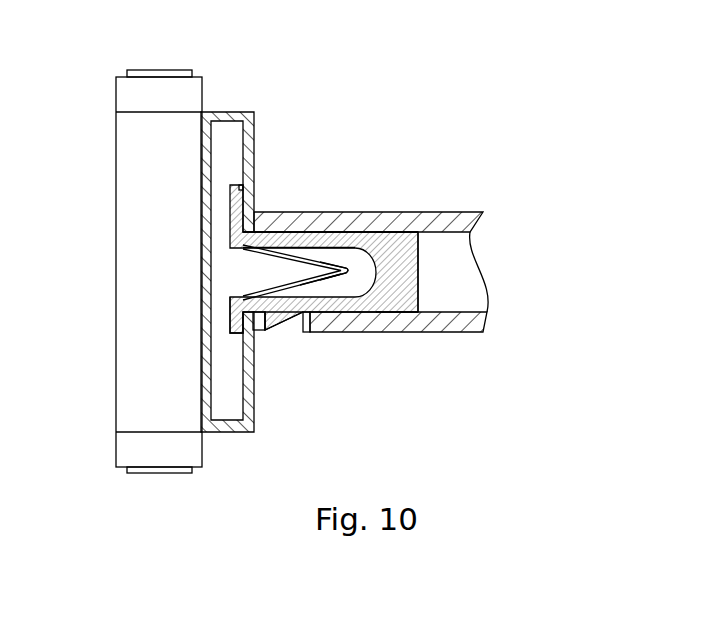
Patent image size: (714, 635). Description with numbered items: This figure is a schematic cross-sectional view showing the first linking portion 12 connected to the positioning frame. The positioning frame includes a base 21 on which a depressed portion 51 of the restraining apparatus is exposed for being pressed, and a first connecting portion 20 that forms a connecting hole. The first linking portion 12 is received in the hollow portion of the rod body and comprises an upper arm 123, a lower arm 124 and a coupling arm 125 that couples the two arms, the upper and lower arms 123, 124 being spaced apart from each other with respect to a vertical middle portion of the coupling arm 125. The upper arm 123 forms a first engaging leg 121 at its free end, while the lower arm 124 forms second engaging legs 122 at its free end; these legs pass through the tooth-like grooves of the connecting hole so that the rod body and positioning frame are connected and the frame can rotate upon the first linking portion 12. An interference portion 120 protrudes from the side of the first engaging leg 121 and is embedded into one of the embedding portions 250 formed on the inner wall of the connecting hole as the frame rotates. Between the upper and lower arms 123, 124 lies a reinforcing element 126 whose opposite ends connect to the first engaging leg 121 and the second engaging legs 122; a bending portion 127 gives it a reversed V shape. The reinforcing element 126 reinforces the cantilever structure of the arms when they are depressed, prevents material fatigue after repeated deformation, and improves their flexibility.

The first linking portion 12 is at (476, 206).
The first connecting portion 20 is at (233, 113).
The base 21 is at (140, 135).
The depressed portion 51 is at (143, 70).
The interference portion 120 is at (242, 193).
The first engaging leg 121 is at (235, 223).
The second engaging leg 122 is at (235, 317).
The upper arm 123 is at (340, 237).
The lower arm 124 is at (313, 308).
The coupling arm 125 is at (403, 275).
The reinforcing element 126 is at (328, 280).
The bending portion 127 is at (348, 272).
The embedding portion 250 is at (245, 196).